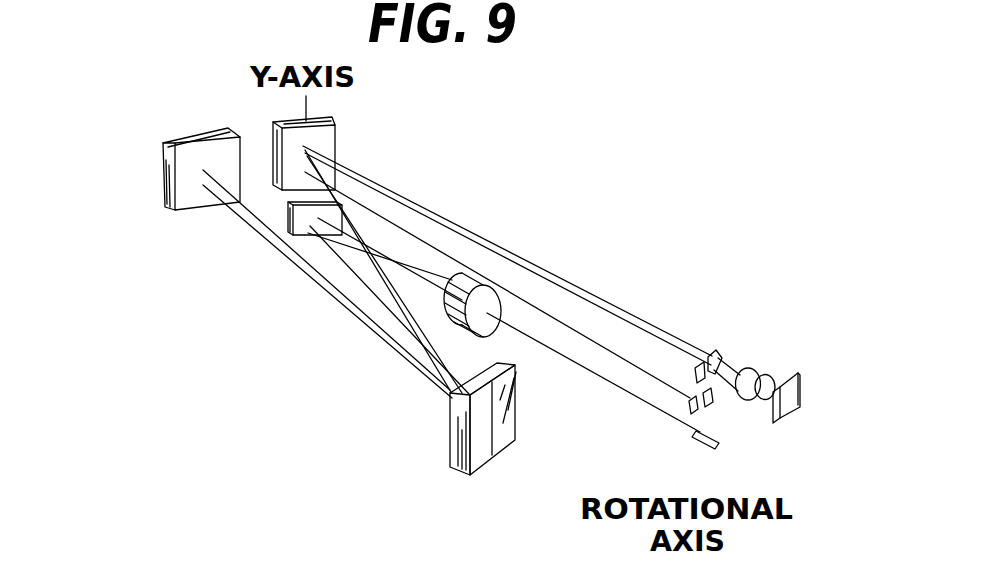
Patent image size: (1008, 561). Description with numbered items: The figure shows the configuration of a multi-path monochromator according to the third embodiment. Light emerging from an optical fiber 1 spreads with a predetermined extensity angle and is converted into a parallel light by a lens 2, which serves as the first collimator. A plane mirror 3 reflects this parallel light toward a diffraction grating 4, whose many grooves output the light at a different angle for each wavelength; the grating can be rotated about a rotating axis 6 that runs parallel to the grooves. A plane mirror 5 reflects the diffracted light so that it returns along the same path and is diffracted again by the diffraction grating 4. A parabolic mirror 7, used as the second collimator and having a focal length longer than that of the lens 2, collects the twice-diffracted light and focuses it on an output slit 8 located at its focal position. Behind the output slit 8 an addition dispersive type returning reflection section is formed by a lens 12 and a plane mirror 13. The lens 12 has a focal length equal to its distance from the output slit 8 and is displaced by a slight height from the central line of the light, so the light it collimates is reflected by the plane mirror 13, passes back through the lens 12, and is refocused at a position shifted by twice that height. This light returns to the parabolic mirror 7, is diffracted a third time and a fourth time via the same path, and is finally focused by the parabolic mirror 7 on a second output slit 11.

The optical fiber 1 is at (703, 444).
The lens 2 is at (487, 285).
The plane mirror 3 is at (308, 227).
The diffraction grating 4 is at (512, 430).
The plane mirror 5 is at (166, 163).
The rotating axis 6 is at (495, 438).
The parabolic mirror 7 is at (335, 145).
The output slit 8 is at (719, 353).
The output slit 11 is at (717, 402).
The lens 12 is at (758, 374).
The plane mirror 13 is at (800, 388).